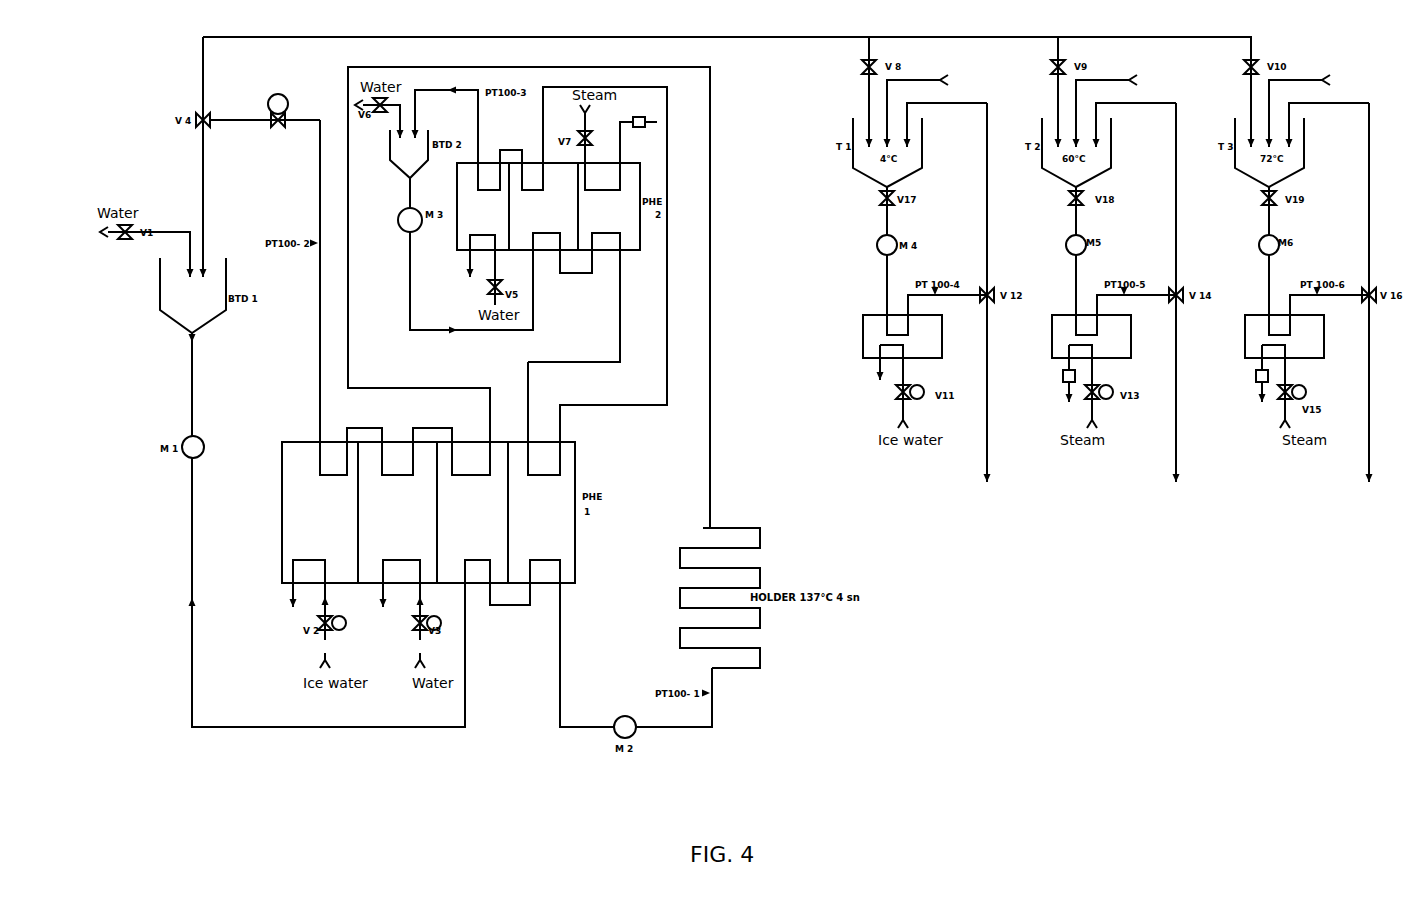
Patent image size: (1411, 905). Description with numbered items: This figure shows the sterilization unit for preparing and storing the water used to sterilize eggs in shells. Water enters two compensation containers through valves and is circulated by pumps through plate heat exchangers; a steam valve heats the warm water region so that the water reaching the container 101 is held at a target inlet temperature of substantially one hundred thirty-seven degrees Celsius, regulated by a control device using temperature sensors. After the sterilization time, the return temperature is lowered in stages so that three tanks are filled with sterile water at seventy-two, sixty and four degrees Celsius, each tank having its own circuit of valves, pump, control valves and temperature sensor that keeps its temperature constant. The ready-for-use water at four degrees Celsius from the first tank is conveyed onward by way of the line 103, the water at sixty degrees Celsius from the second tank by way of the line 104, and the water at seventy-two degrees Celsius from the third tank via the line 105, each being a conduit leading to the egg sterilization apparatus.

The container 101 is at (767, 598).
The line 103 is at (998, 305).
The line 104 is at (1184, 305).
The line 105 is at (1378, 305).